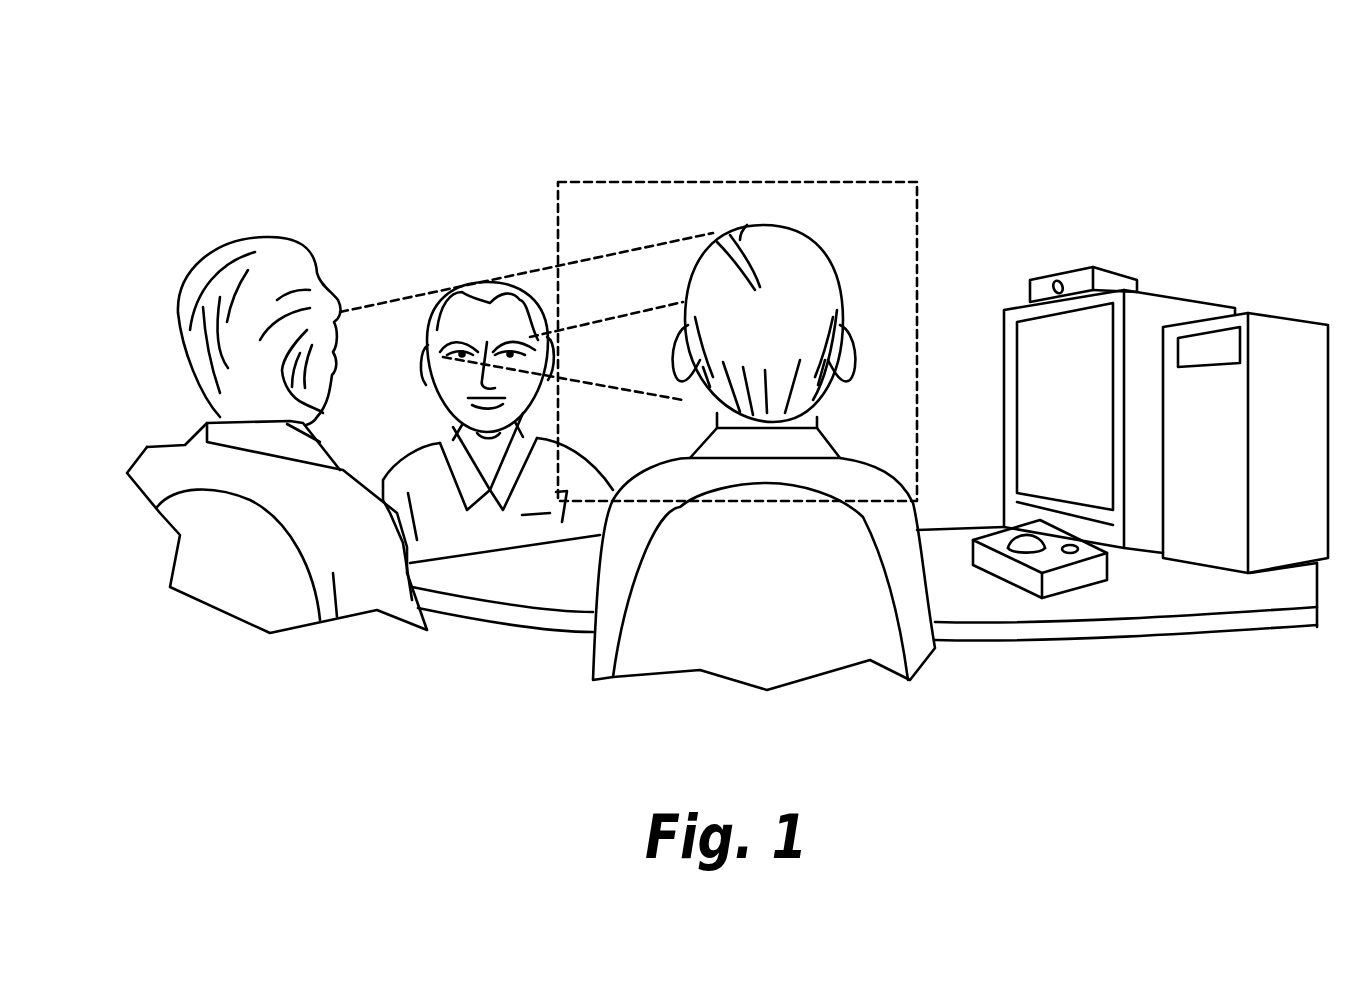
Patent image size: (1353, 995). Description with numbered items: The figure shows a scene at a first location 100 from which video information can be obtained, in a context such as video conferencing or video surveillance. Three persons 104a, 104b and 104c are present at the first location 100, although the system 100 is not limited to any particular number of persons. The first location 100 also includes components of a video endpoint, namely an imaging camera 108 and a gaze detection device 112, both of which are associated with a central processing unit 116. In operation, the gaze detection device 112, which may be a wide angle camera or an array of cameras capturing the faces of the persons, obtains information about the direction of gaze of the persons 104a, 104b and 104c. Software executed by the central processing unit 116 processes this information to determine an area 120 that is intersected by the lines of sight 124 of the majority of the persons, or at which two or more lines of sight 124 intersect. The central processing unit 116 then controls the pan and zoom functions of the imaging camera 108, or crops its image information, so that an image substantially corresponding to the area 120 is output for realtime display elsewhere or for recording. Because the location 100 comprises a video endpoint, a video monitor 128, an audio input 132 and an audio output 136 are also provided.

The first location 100 is at (423, 153).
The person 104a is at (778, 257).
The person 104b is at (208, 255).
The person 104c is at (490, 453).
The imaging camera 108 is at (1082, 265).
The gaze detection device 112 is at (1027, 540).
The central processing unit 116 is at (1275, 338).
The area 120 is at (888, 181).
The lines of sight 124 is at (368, 305).
The video monitor 128 is at (1002, 360).
The audio input 132 is at (997, 540).
The audio output 136 is at (1076, 552).